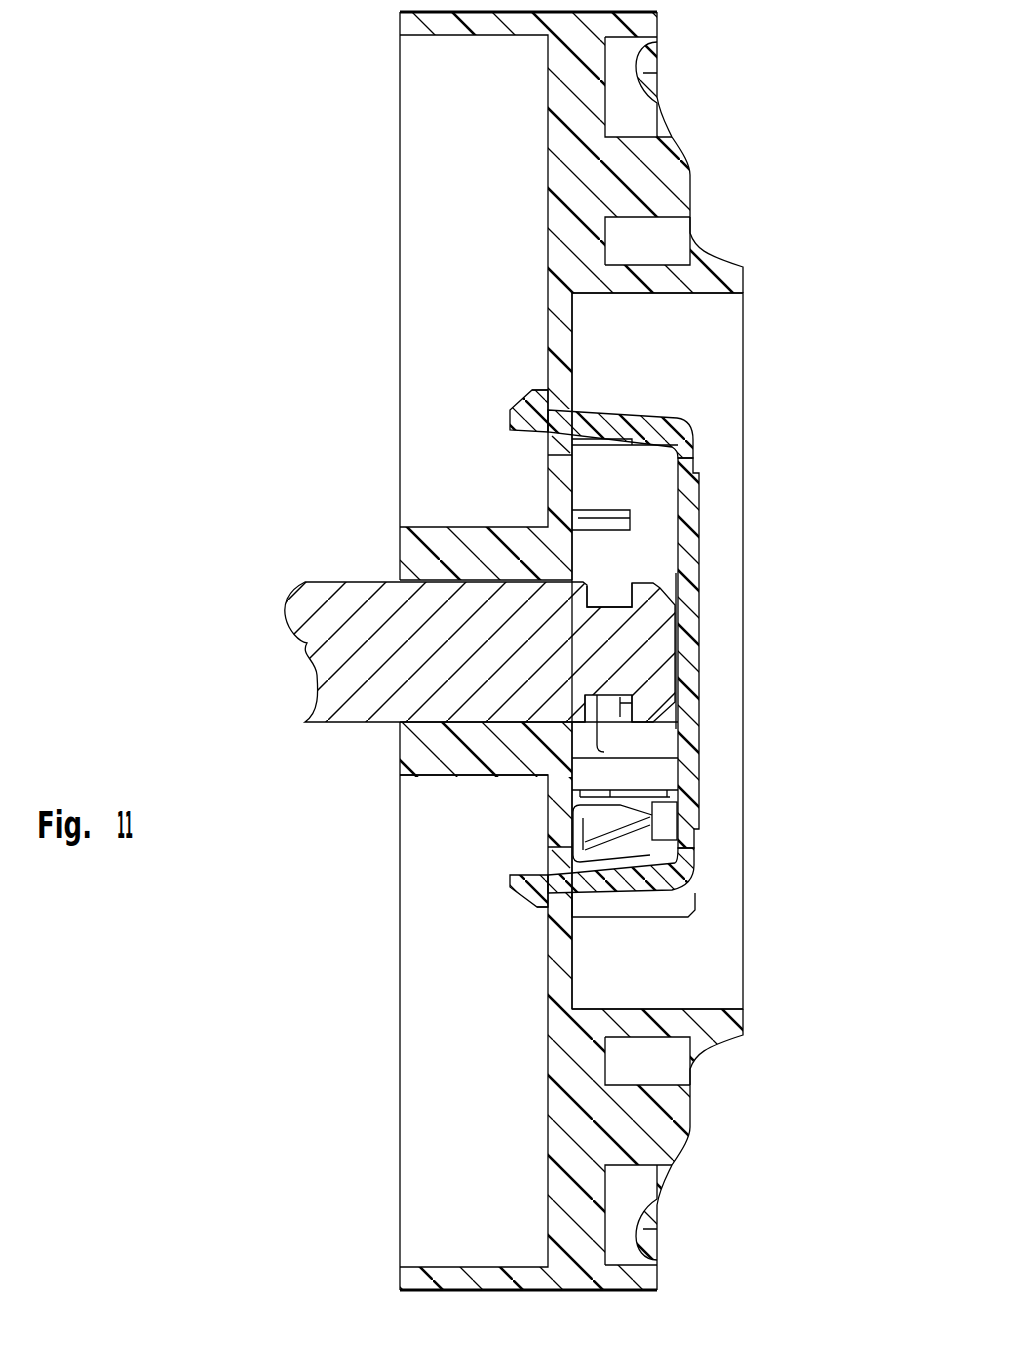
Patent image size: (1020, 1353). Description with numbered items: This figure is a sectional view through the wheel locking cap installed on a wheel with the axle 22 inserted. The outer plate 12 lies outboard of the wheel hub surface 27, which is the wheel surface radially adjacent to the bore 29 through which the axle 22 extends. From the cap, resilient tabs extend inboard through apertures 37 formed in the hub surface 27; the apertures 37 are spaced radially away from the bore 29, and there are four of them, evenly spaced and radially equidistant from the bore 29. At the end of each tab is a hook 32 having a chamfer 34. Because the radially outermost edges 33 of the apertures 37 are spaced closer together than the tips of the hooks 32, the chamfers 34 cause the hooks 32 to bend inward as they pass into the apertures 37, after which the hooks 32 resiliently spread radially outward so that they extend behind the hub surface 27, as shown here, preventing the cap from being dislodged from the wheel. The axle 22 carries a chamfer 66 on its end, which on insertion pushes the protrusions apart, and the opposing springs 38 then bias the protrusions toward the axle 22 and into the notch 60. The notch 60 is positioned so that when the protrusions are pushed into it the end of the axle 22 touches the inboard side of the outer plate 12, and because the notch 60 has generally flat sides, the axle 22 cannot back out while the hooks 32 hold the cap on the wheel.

The outer plate 12 is at (690, 650).
The axle 22 is at (307, 642).
The wheel hub surface 27 is at (578, 470).
The bore 29 is at (427, 745).
The hook 32 is at (541, 390).
The radially outermost edge 33 is at (571, 410).
The chamfer 34 is at (525, 396).
The aperture 37 is at (557, 443).
The spring 38 is at (600, 815).
The notch 60 is at (610, 592).
The chamfer 66 is at (660, 712).